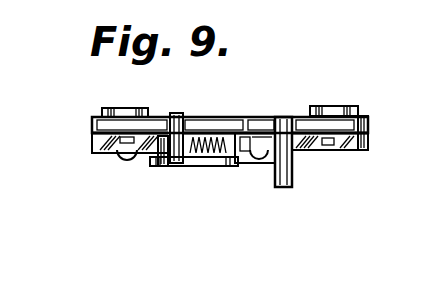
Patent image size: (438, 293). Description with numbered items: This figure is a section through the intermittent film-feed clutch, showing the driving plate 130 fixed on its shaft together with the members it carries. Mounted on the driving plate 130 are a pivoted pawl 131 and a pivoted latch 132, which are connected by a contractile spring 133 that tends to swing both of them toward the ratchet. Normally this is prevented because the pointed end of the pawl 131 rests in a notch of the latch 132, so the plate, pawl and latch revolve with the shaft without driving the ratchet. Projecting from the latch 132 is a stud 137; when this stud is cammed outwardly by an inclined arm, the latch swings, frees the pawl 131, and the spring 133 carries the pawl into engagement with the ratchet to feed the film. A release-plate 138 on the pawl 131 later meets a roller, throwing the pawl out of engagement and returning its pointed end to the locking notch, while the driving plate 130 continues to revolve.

The driving plate 130 is at (368, 124).
The pivoted pawl 131 is at (99, 137).
The pivoted latch 132 is at (375, 148).
The contractile spring 133 is at (142, 155).
The stud 137 is at (283, 188).
The release-plate 138 is at (205, 166).